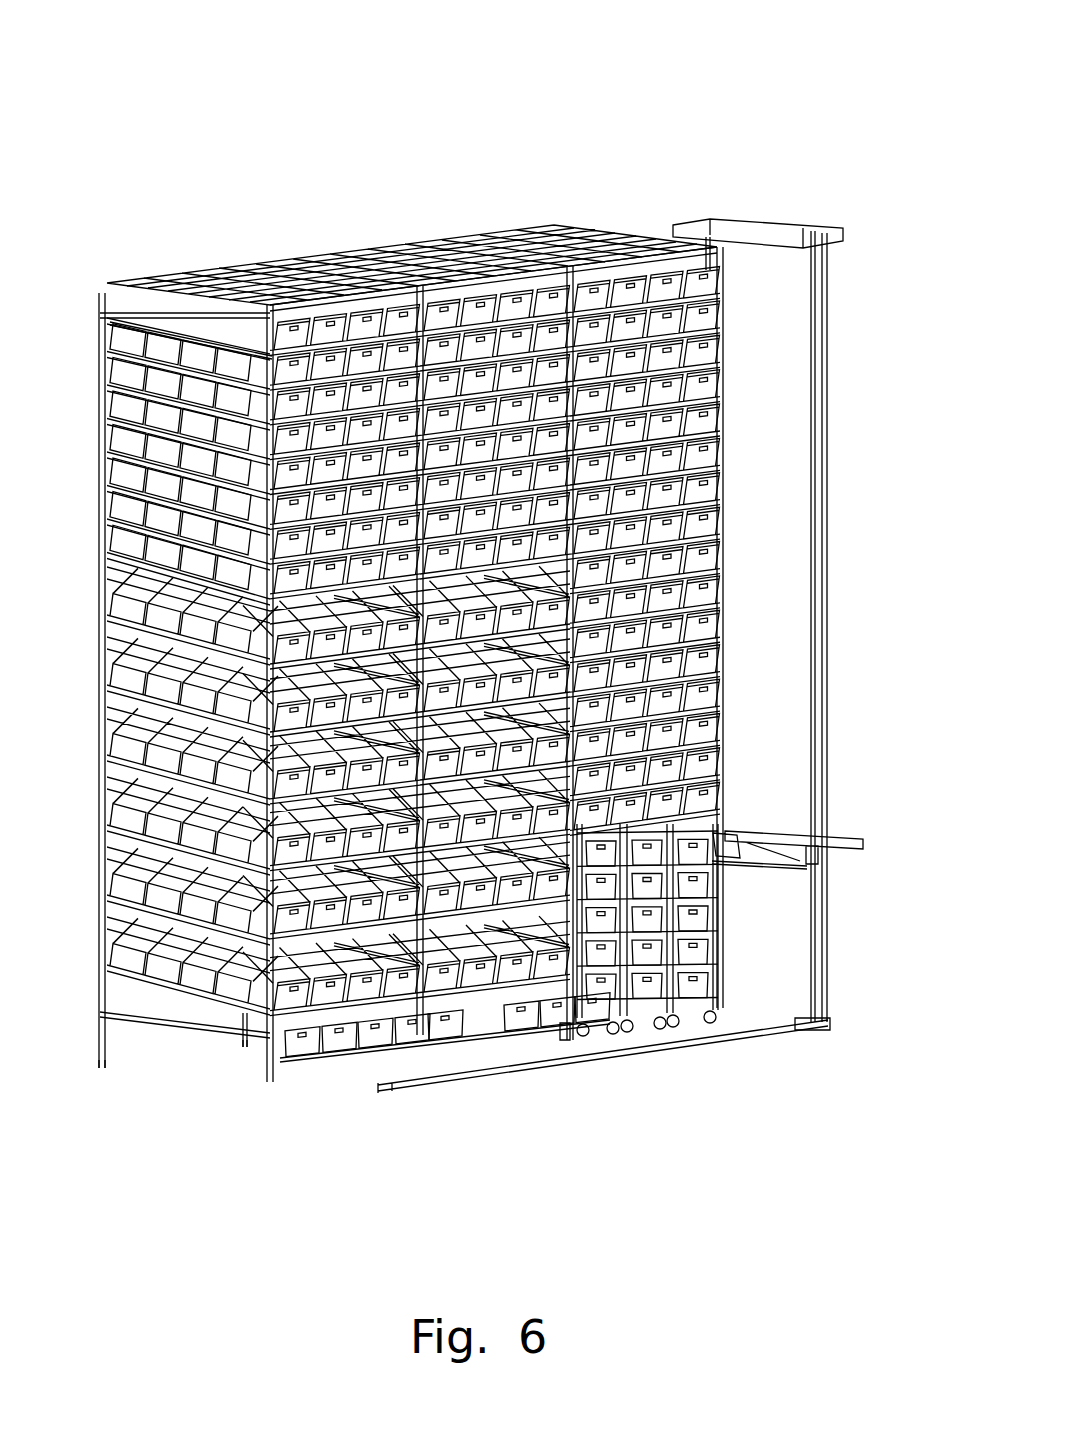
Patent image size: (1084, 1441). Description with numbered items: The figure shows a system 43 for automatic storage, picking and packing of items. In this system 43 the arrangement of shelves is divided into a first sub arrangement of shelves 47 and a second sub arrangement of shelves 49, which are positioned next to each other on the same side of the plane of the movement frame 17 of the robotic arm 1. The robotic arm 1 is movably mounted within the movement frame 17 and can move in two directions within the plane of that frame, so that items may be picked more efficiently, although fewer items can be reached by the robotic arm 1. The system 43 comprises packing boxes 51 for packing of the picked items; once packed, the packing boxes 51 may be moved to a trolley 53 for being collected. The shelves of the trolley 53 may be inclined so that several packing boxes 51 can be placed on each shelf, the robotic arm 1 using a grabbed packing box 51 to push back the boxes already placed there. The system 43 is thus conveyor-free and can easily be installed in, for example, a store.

The second sub arrangement of shelves 49 is at (380, 225).
The system 43 is at (663, 162).
The movement frame 17 is at (852, 198).
The robotic arm 1 is at (787, 808).
The packing boxes 51 is at (558, 1017).
The trolley 53 is at (740, 991).
The first sub arrangement of shelves 47 is at (179, 1097).